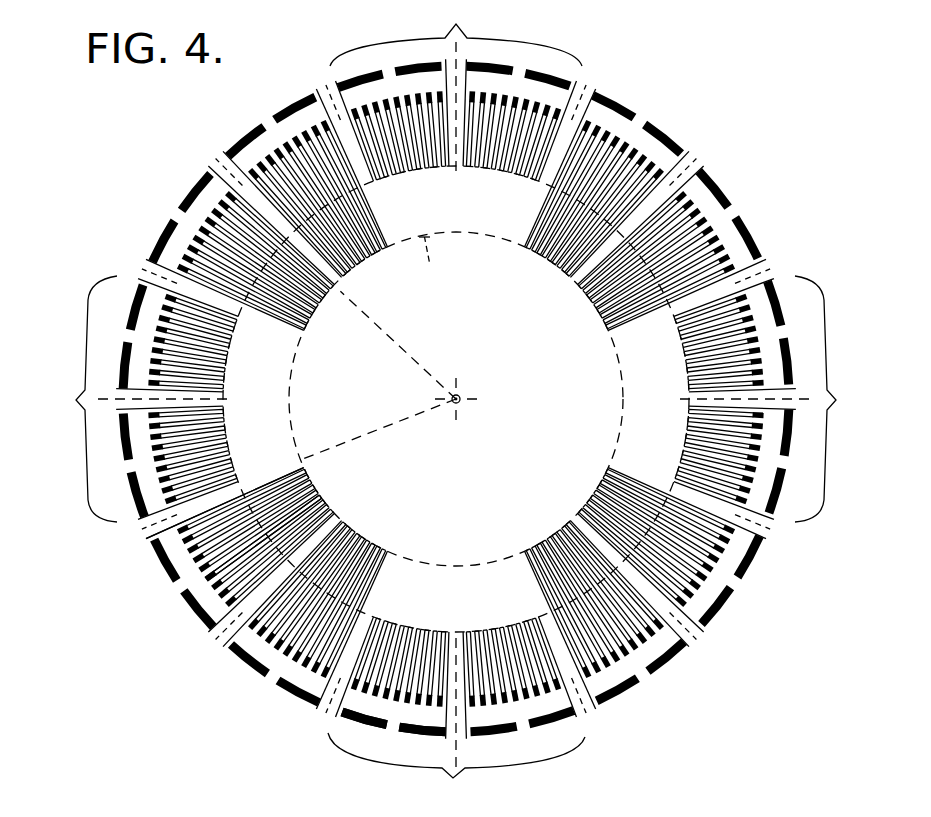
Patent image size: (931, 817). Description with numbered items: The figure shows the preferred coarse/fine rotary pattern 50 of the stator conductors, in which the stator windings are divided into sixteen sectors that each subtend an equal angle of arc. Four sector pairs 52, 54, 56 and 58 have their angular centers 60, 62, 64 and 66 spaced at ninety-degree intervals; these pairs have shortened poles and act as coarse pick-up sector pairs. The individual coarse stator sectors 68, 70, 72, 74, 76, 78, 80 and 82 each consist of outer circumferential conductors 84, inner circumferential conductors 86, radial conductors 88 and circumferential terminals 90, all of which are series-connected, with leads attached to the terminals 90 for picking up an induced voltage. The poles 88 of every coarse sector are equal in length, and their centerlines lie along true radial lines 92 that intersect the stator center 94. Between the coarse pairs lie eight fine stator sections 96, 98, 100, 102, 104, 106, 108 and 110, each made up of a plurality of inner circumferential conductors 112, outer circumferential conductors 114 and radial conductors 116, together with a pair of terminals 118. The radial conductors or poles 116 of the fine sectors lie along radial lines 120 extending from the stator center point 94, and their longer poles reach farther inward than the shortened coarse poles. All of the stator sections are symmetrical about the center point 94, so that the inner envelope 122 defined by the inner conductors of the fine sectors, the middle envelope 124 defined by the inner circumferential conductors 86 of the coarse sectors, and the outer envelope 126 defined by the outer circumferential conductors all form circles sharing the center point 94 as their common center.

The coarse/fine rotary pattern 50 is at (453, 399).
The sector pair 52 is at (80, 399).
The sector pair 54 is at (456, 771).
The sector pair 56 is at (831, 399).
The sector pair 58 is at (456, 33).
The angular center 60 is at (108, 408).
The angular center 62 is at (458, 742).
The angular center 64 is at (814, 406).
The angular center 66 is at (462, 46).
The coarse stator sector 68 is at (250, 352).
The coarse stator sector 70 is at (250, 442).
The coarse stator sector 72 is at (398, 612).
The coarse stator sector 74 is at (530, 610).
The coarse stator sector 76 is at (711, 454).
The coarse stator sector 78 is at (676, 372).
The coarse stator sector 80 is at (513, 183).
The coarse stator sector 82 is at (383, 182).
The outer circumferential conductors 84 is at (514, 87).
The inner circumferential conductors 86 is at (566, 399).
The radial conductors 88 is at (628, 399).
The circumferential terminals 90 is at (426, 60).
The true radial lines 92 is at (387, 423).
The stator center 94 is at (462, 395).
The fine stator section 96 is at (322, 322).
The fine stator section 98 is at (377, 264).
The fine stator section 100 is at (548, 268).
The fine stator section 102 is at (586, 311).
The fine stator section 104 is at (570, 488).
The fine stator section 106 is at (540, 530).
The fine stator section 108 is at (371, 522).
The fine stator section 110 is at (250, 547).
The inner circumferential conductors 112 is at (324, 483).
The outer circumferential conductors 114 is at (205, 575).
The radial conductors 116 is at (207, 513).
The terminals 118 is at (168, 578).
The radial lines 120 is at (420, 328).
The inner envelope 122 is at (419, 250).
The middle envelope 124 is at (216, 403).
The outer envelope 126 is at (330, 122).